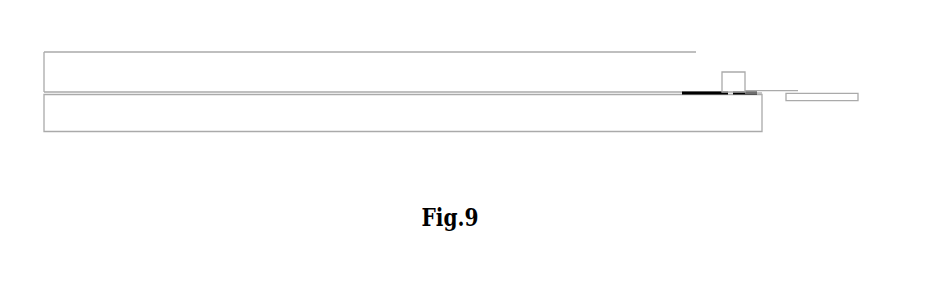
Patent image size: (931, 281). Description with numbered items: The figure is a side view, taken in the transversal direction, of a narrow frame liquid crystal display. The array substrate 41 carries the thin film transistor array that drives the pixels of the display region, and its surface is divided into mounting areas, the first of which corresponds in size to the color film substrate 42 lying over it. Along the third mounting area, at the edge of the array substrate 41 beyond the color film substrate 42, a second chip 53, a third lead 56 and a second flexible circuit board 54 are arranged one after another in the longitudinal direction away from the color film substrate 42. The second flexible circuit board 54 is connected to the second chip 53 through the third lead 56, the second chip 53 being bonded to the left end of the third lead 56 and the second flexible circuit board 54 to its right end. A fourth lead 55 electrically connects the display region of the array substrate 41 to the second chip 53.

The array substrate 41 is at (387, 118).
The color film substrate 42 is at (423, 67).
The second chip 53 is at (730, 78).
The second flexible circuit board 54 is at (773, 91).
The fourth lead 55 is at (713, 92).
The third lead 56 is at (750, 93).